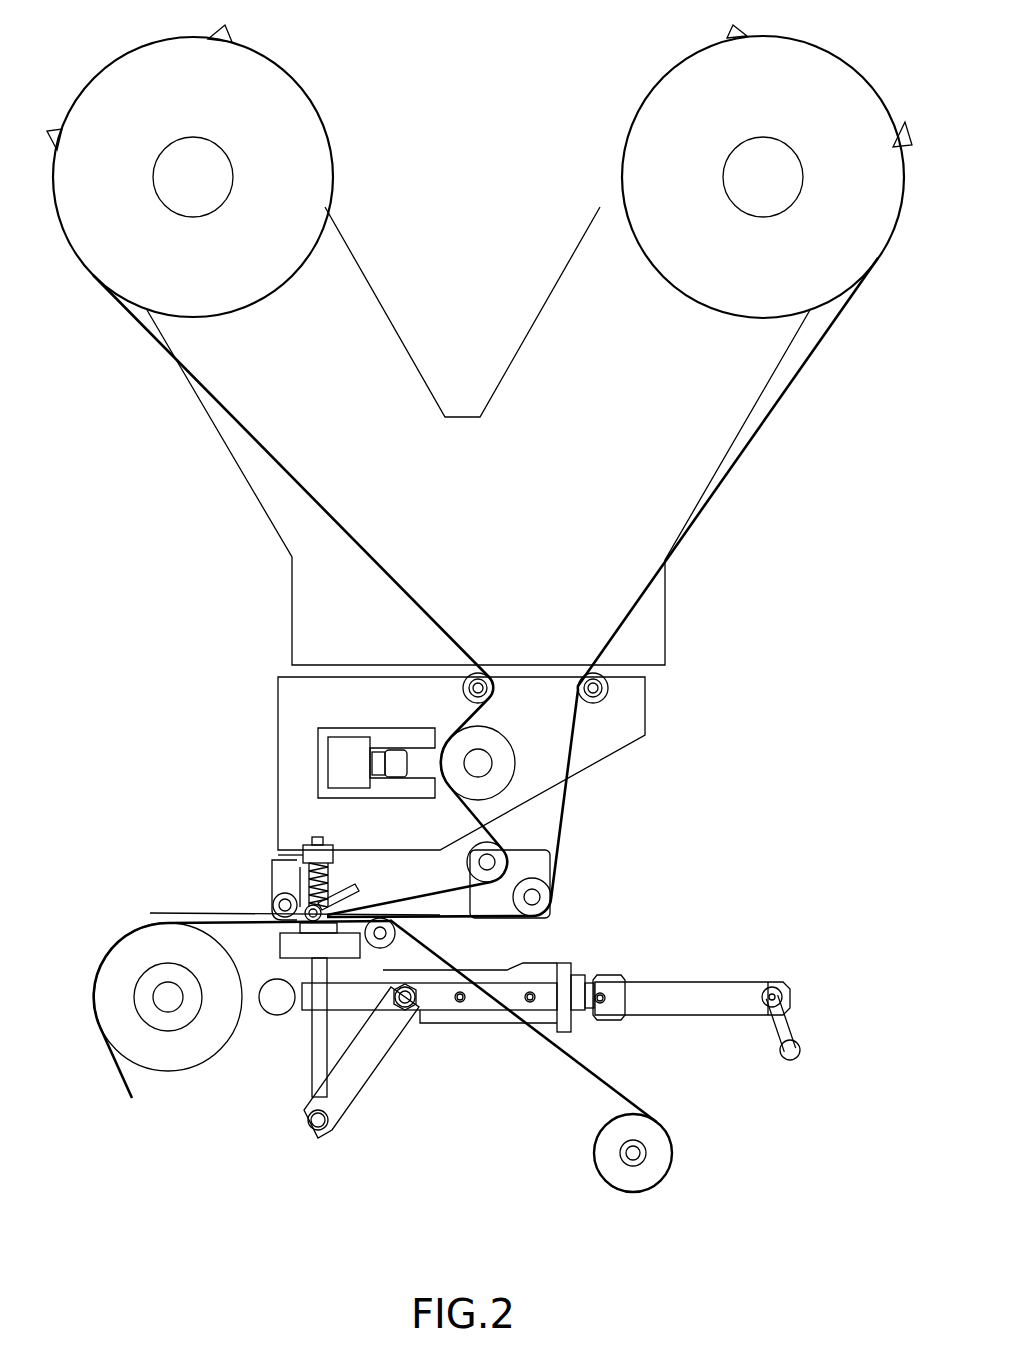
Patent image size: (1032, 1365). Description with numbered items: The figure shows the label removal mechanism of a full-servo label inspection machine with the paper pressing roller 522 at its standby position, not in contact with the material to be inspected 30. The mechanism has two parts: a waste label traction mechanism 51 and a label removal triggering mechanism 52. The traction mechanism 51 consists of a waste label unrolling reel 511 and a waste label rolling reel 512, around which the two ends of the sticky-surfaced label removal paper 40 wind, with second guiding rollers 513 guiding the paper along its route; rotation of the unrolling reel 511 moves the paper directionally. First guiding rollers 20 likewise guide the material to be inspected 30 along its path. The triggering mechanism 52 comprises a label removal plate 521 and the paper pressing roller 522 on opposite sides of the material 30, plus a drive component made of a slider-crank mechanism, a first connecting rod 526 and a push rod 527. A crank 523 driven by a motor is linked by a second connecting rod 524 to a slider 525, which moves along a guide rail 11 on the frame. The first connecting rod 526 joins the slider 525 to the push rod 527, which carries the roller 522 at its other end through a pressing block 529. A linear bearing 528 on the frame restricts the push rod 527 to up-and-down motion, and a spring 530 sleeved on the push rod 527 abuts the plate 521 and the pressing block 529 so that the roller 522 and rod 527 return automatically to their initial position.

The guide rail 11 is at (407, 1005).
The first guiding roller 20 is at (658, 1140).
The material to be inspected 30 is at (583, 1067).
The label removal paper 40 is at (308, 498).
The waste label traction mechanism 51 is at (733, 503).
The waste label unrolling reel 511 is at (207, 173).
The waste label rolling reel 512 is at (763, 177).
The second guiding roller 513 is at (478, 762).
The label removal triggering mechanism 52 is at (290, 1162).
The label removal plate 521 is at (363, 921).
The paper pressing roller 522 is at (270, 913).
The crank 523 is at (785, 994).
The second connecting rod 524 is at (655, 983).
The slider 525 is at (467, 1020).
The first connecting rod 526 is at (333, 1098).
The push rod 527 is at (187, 913).
The linear bearing 528 is at (407, 1007).
The pressing block 529 is at (286, 892).
The spring 530 is at (317, 837).